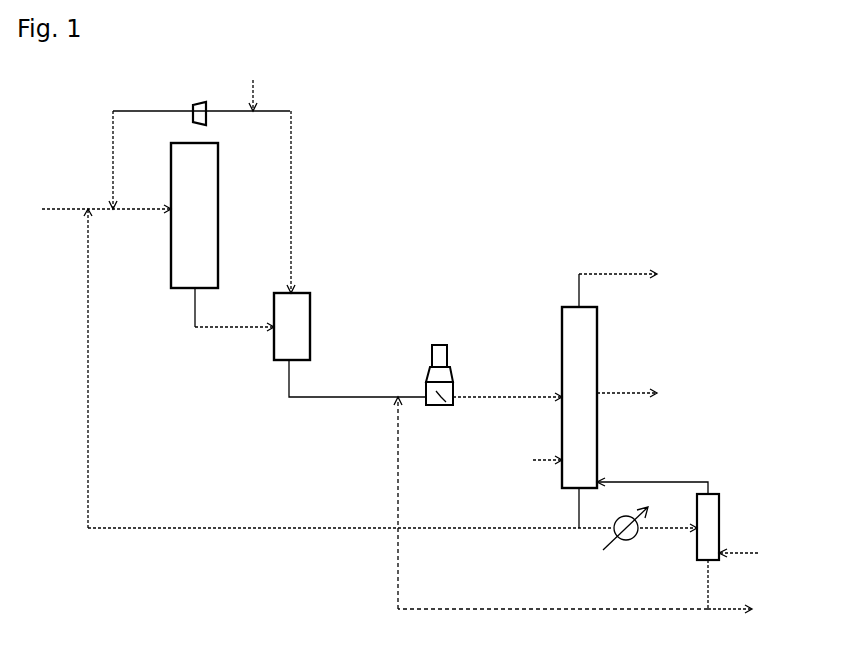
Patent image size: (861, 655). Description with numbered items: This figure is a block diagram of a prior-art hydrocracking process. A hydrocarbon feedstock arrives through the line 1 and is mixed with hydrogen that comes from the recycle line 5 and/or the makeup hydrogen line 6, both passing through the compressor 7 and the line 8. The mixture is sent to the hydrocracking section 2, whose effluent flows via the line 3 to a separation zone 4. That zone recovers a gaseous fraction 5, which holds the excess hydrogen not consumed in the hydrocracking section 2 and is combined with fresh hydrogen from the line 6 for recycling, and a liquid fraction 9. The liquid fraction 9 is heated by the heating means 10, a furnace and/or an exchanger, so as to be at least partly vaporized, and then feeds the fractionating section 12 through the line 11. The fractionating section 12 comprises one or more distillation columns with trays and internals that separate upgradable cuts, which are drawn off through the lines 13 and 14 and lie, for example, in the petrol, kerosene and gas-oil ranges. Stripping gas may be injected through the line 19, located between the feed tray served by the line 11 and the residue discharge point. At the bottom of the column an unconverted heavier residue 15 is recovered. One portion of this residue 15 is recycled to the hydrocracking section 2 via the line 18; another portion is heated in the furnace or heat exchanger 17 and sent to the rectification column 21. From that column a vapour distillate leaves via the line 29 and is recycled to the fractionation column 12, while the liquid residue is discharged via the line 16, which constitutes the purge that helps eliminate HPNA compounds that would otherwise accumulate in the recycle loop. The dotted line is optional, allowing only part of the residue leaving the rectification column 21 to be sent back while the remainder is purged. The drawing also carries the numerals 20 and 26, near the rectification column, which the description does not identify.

The feedstock line 1 is at (64, 207).
The hydrocracking section 2 is at (218, 228).
The effluent line 3 is at (212, 329).
The separation zone 4 is at (310, 318).
The recycle line 5 is at (292, 200).
The makeup hydrogen line 6 is at (250, 88).
The compressor 7 is at (194, 104).
The hydrogen supply line 8 is at (112, 155).
The liquid fraction 9 is at (380, 390).
The heating means 10 is at (428, 372).
The fractionating section feed line 11 is at (496, 396).
The fractionating section 12 is at (562, 342).
The distillate draw-off line 13 is at (614, 272).
The distillate draw-off line 14 is at (630, 392).
The residue line 15 is at (572, 516).
The purge line 16 is at (90, 320).
The heat exchanger 17 is at (628, 540).
The residue recycle line 18 is at (718, 613).
The stripping gas line 19 is at (548, 456).
The separator feed line 20 is at (684, 528).
The rectification column 21 is at (697, 551).
The separator inlet line 26 is at (747, 553).
The vapour distillate line 29 is at (697, 481).